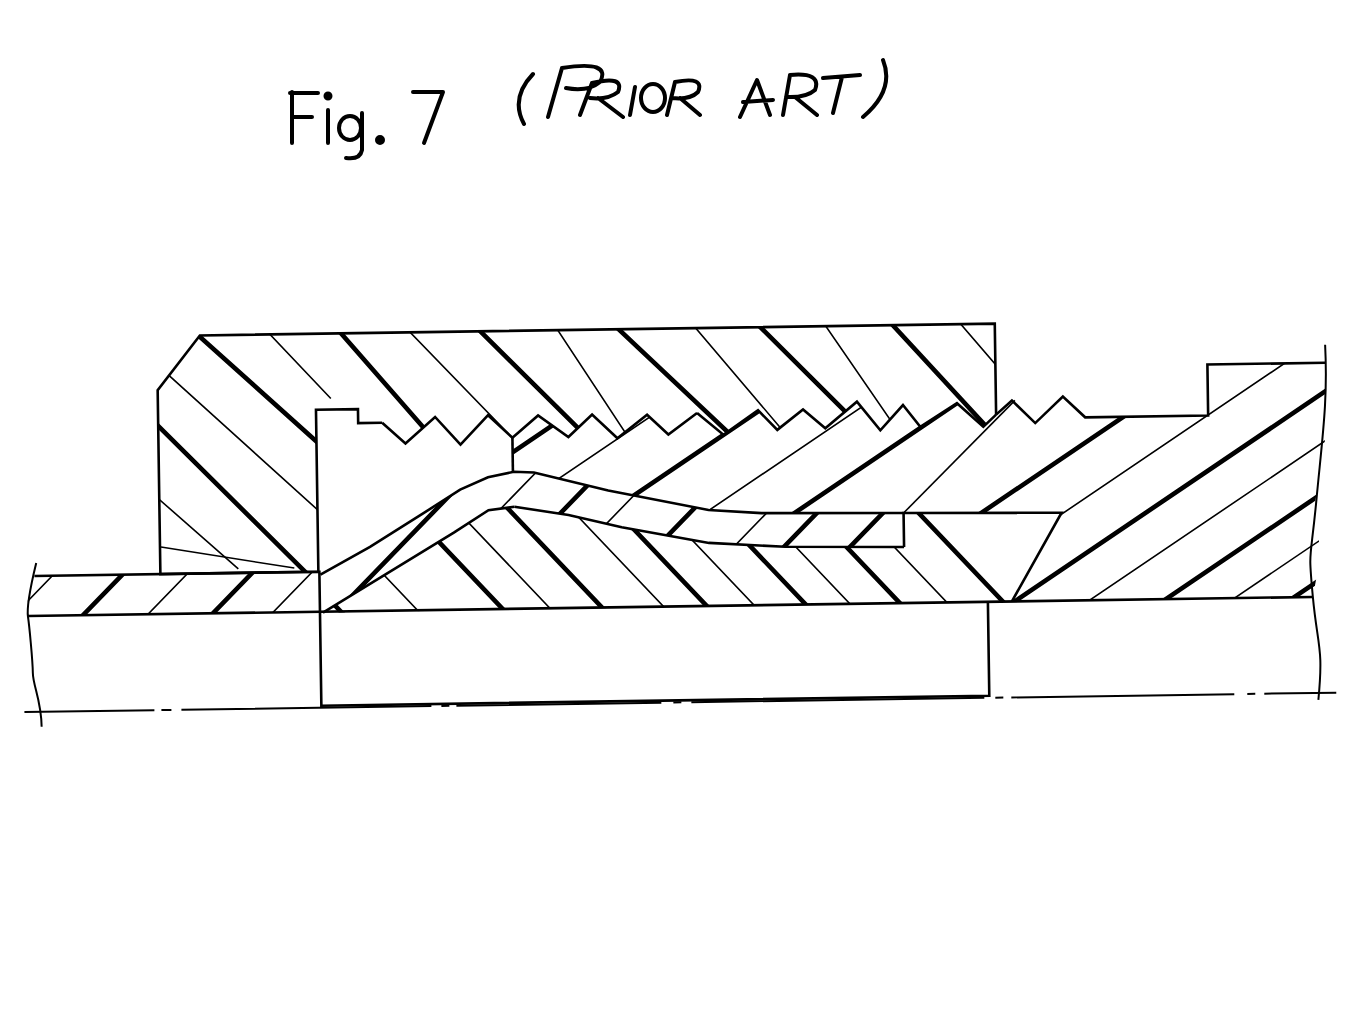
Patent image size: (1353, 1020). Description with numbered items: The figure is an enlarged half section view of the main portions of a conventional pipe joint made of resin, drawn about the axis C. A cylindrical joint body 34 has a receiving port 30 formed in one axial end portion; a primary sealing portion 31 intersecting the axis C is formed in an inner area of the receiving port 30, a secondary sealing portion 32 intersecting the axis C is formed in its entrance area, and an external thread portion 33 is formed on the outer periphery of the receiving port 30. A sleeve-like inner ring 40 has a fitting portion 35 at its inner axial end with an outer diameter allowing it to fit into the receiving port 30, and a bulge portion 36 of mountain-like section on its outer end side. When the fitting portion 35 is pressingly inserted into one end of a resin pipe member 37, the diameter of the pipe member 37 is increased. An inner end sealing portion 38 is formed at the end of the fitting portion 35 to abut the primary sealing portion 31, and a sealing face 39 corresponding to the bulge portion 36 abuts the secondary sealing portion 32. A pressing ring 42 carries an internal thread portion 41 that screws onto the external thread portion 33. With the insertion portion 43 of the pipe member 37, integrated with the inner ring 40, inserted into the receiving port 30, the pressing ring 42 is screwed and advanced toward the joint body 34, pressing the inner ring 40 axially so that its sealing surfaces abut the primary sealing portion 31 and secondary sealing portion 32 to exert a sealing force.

The receiving port 30 is at (810, 453).
The primary sealing portion 31 is at (1007, 573).
The secondary sealing portion 32 is at (592, 525).
The external thread portion 33 is at (878, 410).
The joint body 34 is at (1239, 355).
The fitting portion 35 is at (963, 528).
The bulge portion 36 is at (505, 528).
The pipe member 37 is at (84, 566).
The inner end sealing portion 38 is at (1027, 525).
The sealing face 39 is at (622, 478).
The inner ring 40 is at (686, 607).
The internal thread portion 41 is at (697, 420).
The pressing ring 42 is at (250, 326).
The insertion portion 43 is at (783, 540).
The axis C is at (1192, 695).